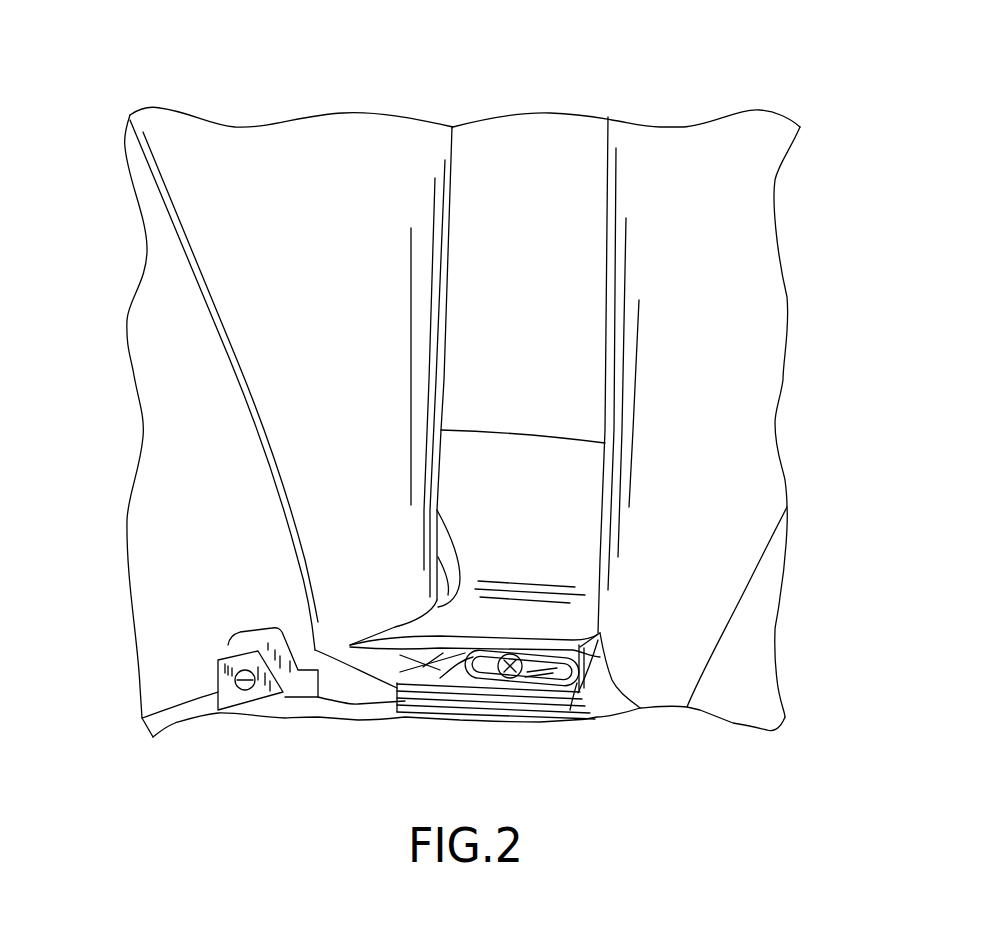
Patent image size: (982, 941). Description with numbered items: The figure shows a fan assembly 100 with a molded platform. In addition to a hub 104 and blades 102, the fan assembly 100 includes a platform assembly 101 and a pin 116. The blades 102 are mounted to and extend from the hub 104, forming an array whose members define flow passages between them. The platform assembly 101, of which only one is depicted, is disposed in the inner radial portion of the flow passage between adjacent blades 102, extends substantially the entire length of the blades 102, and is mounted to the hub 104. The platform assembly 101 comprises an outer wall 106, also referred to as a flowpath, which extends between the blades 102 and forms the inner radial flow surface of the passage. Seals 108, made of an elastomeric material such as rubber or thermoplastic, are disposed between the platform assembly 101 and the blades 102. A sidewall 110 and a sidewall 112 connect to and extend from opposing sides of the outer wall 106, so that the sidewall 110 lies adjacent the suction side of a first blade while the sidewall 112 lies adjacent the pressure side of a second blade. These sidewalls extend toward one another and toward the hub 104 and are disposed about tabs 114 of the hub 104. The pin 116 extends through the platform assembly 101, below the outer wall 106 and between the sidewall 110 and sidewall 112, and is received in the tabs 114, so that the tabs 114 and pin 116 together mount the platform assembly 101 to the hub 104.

The fan assembly 100 is at (478, 124).
The platform assembly 101 is at (522, 370).
The blades 102 is at (240, 340).
The hub 104 is at (437, 698).
The outer wall 106 is at (546, 561).
The seals 108 is at (448, 540).
The sidewall 110 is at (490, 678).
The sidewall 112 is at (578, 688).
The tabs 114 is at (258, 628).
The pin 116 is at (527, 676).